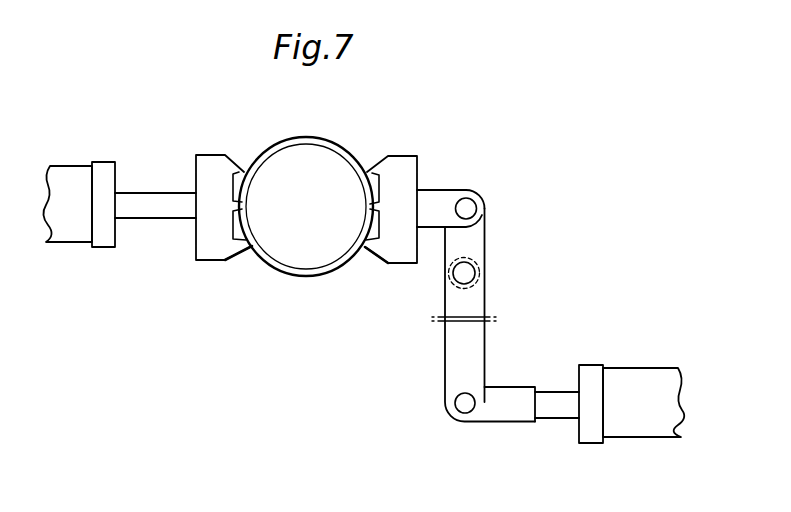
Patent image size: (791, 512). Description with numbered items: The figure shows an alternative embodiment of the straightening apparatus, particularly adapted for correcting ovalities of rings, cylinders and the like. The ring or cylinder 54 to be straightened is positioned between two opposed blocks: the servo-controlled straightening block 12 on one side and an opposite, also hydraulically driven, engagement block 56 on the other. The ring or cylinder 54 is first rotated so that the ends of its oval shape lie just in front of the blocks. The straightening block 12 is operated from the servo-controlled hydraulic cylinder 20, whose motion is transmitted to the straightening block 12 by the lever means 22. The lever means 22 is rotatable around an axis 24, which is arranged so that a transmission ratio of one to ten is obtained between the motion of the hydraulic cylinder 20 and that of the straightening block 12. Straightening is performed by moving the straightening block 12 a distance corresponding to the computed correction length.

The straightening block 12 is at (411, 157).
The hydraulic cylinder 20 is at (589, 377).
The lever means 22 is at (464, 363).
The axis 24 is at (474, 275).
The ring or cylinder 54 is at (329, 264).
The engagement block 56 is at (213, 168).